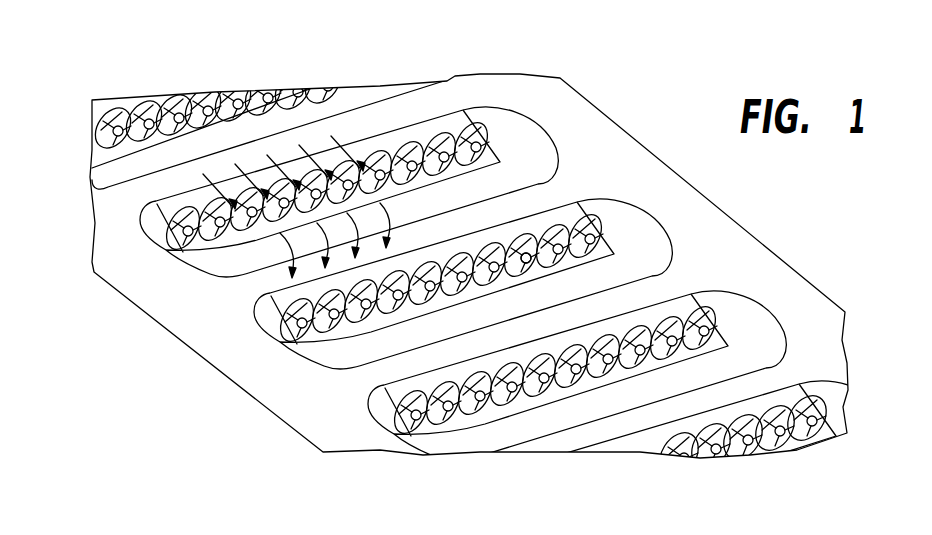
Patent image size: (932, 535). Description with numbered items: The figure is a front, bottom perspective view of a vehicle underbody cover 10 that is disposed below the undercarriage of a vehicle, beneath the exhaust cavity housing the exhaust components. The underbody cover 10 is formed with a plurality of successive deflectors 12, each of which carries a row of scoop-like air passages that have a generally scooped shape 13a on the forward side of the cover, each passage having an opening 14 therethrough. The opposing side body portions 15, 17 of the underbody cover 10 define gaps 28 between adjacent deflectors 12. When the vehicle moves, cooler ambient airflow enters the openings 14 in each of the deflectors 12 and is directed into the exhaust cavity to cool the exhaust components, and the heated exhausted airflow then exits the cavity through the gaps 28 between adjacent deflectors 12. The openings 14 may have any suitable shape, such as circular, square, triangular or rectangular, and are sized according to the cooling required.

The underbody cover 10 is at (659, 95).
The deflector 12 is at (505, 133).
The scooped shape 13a is at (541, 232).
The opening 14 is at (182, 244).
The side body portion 15 is at (720, 257).
The side body portion 17 is at (235, 332).
The gap 28 is at (240, 262).